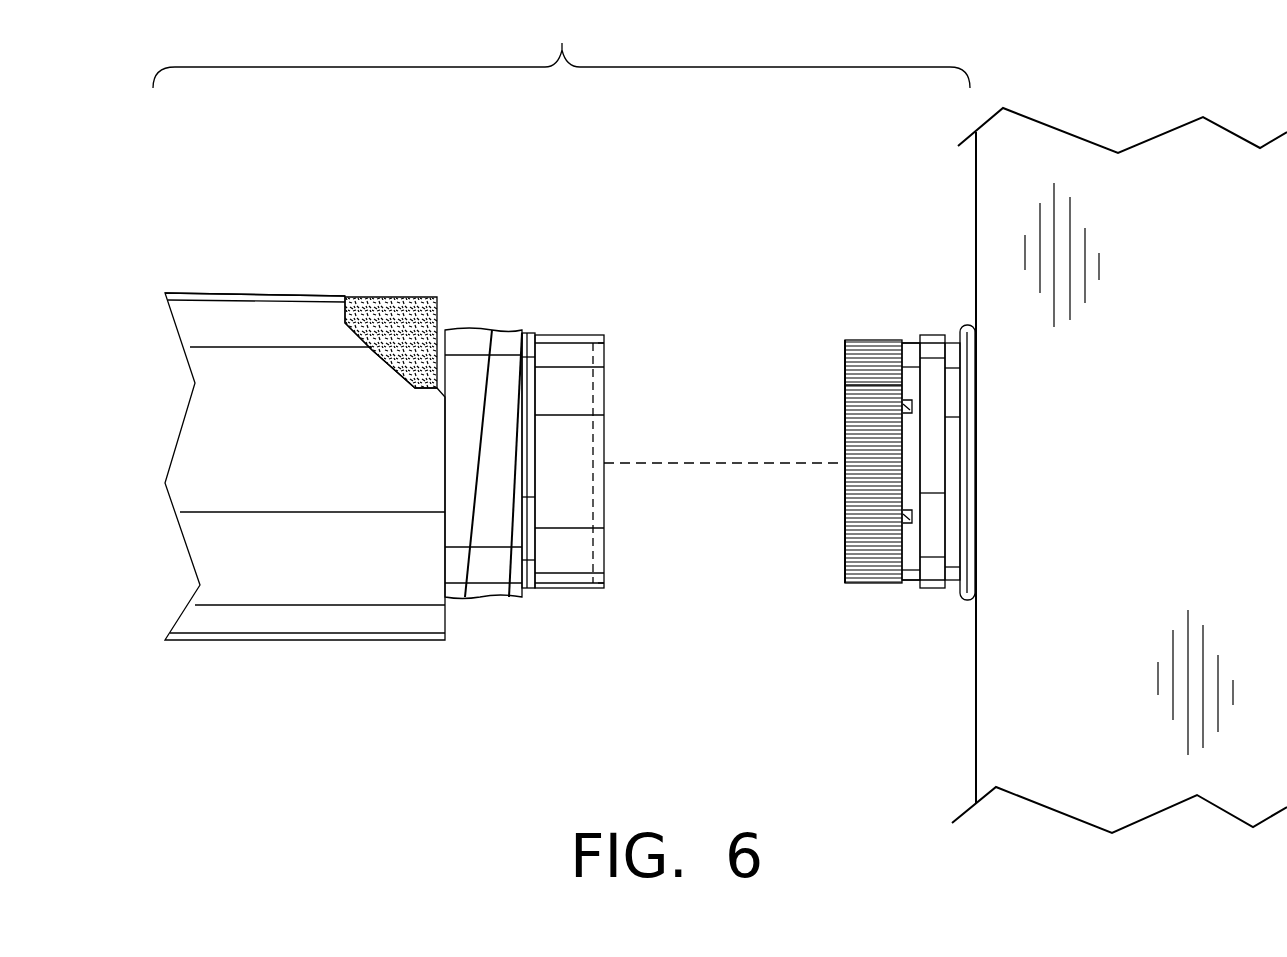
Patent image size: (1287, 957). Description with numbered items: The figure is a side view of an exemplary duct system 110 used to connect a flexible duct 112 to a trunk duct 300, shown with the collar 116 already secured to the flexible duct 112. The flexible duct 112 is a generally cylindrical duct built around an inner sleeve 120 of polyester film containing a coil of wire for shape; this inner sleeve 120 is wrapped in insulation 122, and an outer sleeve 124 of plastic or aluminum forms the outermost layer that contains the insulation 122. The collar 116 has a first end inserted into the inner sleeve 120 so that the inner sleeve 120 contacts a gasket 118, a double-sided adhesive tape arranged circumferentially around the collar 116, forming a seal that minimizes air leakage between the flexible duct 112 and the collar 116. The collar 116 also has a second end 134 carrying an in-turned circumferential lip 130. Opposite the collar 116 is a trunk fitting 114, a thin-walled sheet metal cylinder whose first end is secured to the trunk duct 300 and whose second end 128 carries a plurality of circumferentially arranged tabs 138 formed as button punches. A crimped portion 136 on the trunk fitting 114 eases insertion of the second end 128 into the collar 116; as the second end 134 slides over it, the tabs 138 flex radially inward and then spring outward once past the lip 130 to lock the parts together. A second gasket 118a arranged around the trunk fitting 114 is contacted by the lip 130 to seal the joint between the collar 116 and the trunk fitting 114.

The duct system 110 is at (561, 51).
The flexible duct 112 is at (250, 642).
The trunk fitting 114 is at (850, 340).
The collar 116 is at (556, 333).
The gasket 118 is at (525, 598).
The second gasket 118a is at (935, 335).
The inner sleeve 120 is at (463, 330).
The insulation 122 is at (371, 297).
The outer sleeve 124 is at (212, 293).
The second end 128 is at (843, 390).
The in-turned circumferential lip 130 is at (604, 352).
The second end 134 is at (612, 548).
The crimped portion 136 is at (845, 357).
The circumferentially arranged tabs 138 is at (905, 338).
The trunk duct 300 is at (976, 715).